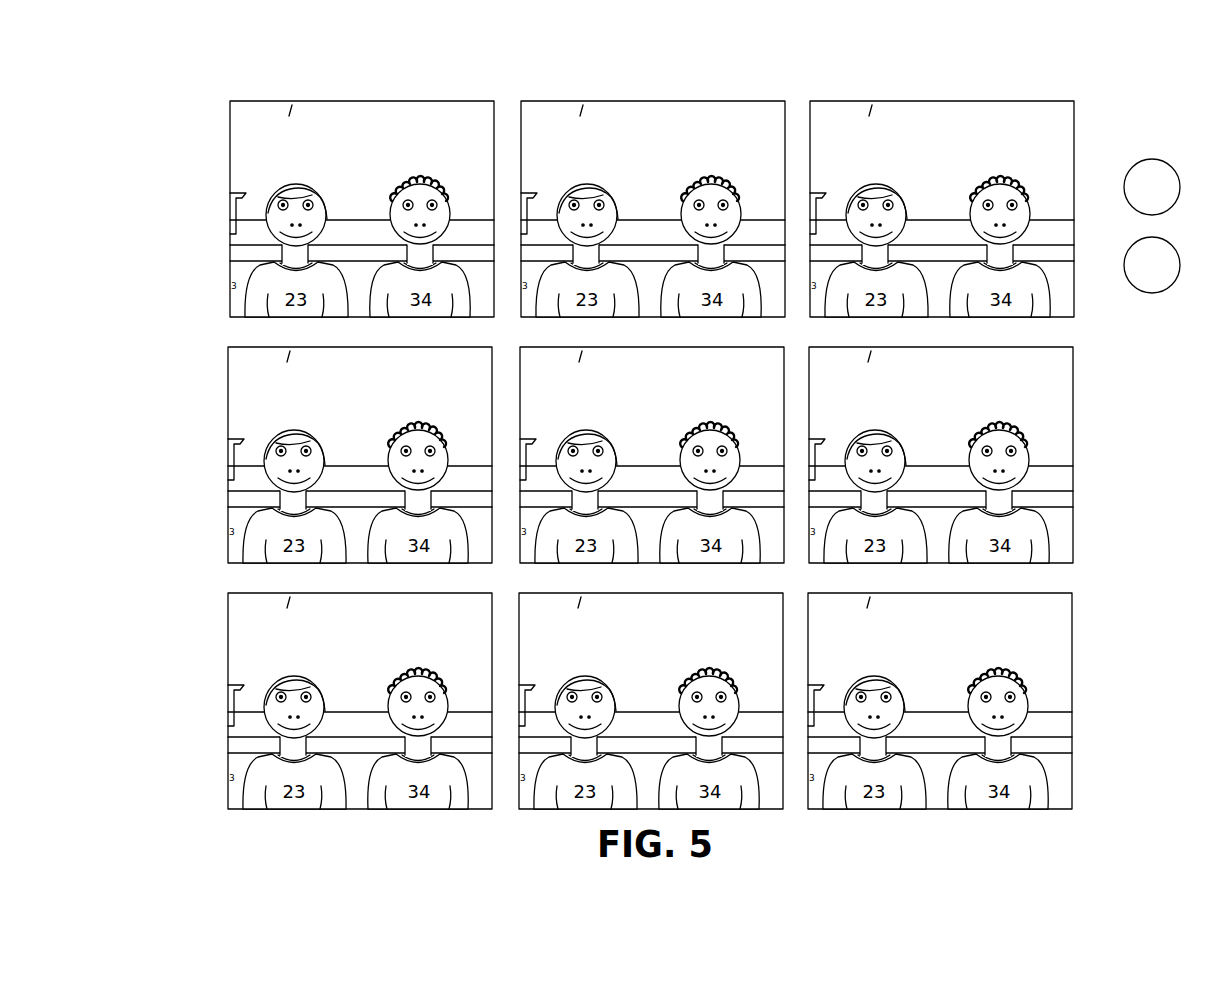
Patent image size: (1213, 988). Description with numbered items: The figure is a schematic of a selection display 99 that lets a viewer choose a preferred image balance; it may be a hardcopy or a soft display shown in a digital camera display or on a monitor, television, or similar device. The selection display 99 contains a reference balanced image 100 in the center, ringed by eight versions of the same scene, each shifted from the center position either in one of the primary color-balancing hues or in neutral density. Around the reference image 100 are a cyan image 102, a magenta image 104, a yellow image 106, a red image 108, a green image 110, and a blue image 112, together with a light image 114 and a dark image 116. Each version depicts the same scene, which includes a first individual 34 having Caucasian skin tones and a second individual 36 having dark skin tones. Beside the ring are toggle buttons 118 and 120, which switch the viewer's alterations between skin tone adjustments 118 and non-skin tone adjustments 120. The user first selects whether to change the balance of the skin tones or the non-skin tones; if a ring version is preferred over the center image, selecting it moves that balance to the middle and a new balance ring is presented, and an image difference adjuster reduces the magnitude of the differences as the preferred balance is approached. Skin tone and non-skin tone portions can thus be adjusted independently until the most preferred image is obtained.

The selection display 99 is at (662, 454).
The reference balanced image 100 is at (762, 367).
The cyan image 102 is at (247, 650).
The magenta image 104 is at (1045, 377).
The yellow image 106 is at (268, 157).
The red image 108 is at (998, 122).
The green image 110 is at (258, 373).
The blue image 112 is at (1045, 623).
The light image 114 is at (718, 131).
The dark image 116 is at (542, 797).
The toggle button for skin tone adjustments 118 is at (1130, 178).
The toggle button for non-skin tone adjustments 120 is at (1130, 273).
The first individual 34 is at (585, 485).
The second individual 36 is at (709, 485).